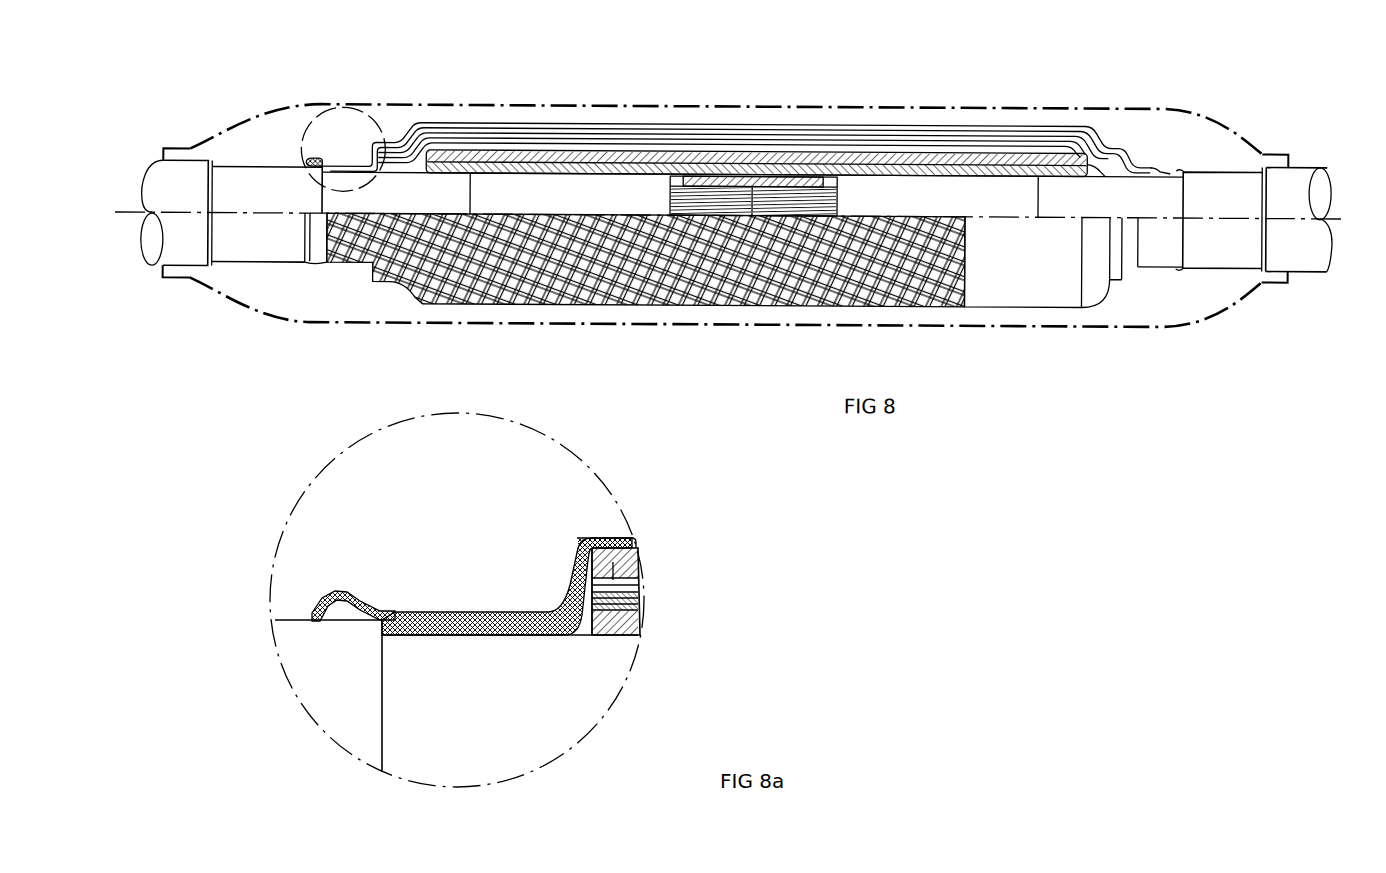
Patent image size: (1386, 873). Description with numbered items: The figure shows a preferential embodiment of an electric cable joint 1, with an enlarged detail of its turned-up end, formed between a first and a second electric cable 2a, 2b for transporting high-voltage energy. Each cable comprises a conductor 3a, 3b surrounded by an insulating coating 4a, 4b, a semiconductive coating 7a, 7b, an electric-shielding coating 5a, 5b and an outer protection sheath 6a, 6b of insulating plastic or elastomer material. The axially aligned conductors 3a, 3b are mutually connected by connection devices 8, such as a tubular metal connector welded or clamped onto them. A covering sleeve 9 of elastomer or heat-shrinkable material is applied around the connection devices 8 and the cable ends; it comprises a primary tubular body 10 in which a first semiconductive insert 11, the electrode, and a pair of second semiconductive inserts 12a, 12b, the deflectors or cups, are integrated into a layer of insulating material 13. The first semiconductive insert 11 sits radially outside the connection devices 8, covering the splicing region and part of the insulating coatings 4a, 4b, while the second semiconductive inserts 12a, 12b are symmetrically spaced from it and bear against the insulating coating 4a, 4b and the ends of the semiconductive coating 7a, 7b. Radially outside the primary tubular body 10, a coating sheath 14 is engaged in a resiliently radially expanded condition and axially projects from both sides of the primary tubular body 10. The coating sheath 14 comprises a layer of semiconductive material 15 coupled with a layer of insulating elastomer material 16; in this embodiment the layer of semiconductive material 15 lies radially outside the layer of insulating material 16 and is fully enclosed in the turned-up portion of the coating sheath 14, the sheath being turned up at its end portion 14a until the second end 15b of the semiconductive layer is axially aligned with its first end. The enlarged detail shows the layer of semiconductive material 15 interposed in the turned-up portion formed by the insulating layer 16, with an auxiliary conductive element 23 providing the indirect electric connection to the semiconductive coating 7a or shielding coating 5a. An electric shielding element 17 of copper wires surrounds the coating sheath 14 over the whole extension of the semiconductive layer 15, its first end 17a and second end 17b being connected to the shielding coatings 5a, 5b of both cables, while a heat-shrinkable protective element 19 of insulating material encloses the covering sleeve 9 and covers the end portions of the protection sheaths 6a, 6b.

In FIG. 8, the electric cable joint 1 is at (225, 105).
In FIG. 8, the first electric cable 2a is at (157, 272).
In FIG. 8, the second electric cable 2b is at (1304, 148).
In FIG. 8, the conductor 3a is at (712, 203).
In FIG. 8, the conductor 3b is at (797, 205).
In FIG. 8, the insulating coating 4a is at (638, 195).
In FIG. 8, the insulating coating 4b is at (980, 197).
In FIG. 8, the electric-shielding coating 5a is at (277, 240).
In FIG. 8A, the electric-shielding coating 5a is at (348, 685).
In FIG. 8, the electric-shielding coating 5b is at (1230, 185).
In FIG. 8, the protection sheath 6a is at (195, 225).
In FIG. 8, the protection sheath 6b is at (1308, 252).
In FIG. 8, the semiconductive coating 7a is at (346, 186).
In FIG. 8A, the semiconductive coating 7a is at (487, 748).
In FIG. 8, the semiconductive coating 7b is at (1165, 245).
In FIG. 8, the connection devices 8 is at (752, 152).
In FIG. 8, the covering sleeve 9 is at (1049, 303).
In FIG. 8, the primary tubular body 10 is at (583, 178).
In FIG. 8, the first semiconductive insert 11 is at (853, 157).
In FIG. 8, the second semiconductive insert 12a is at (467, 148).
In FIG. 8, the second semiconductive insert 12b is at (1060, 157).
In FIG. 8, the layer of insulating material 13 is at (932, 160).
In FIG. 8A, the coating sheath 14 is at (660, 546).
In FIG. 8, the end portion of the coating sheath 14a is at (399, 115).
In FIG. 8, the layer of semiconductive material 15 is at (540, 136).
In FIG. 8A, the layer of semiconductive material 15 is at (640, 600).
In FIG. 8A, the second end of the semiconductive layer 15b is at (573, 560).
In FIG. 8, the layer of insulating material 16 is at (608, 129).
In FIG. 8A, the layer of insulating material 16 is at (616, 622).
In FIG. 8, the electric shielding element 17 is at (672, 122).
In FIG. 8A, the electric shielding element 17 is at (465, 612).
In FIG. 8, the first end of the shielding element 17a is at (320, 245).
In FIG. 8, the second end of the shielding element 17b is at (1182, 166).
In FIG. 8, the protective element 19 is at (1005, 98).
In FIG. 8, the auxiliary conductive element 23 is at (352, 160).
In FIG. 8A, the auxiliary conductive element 23 is at (586, 632).